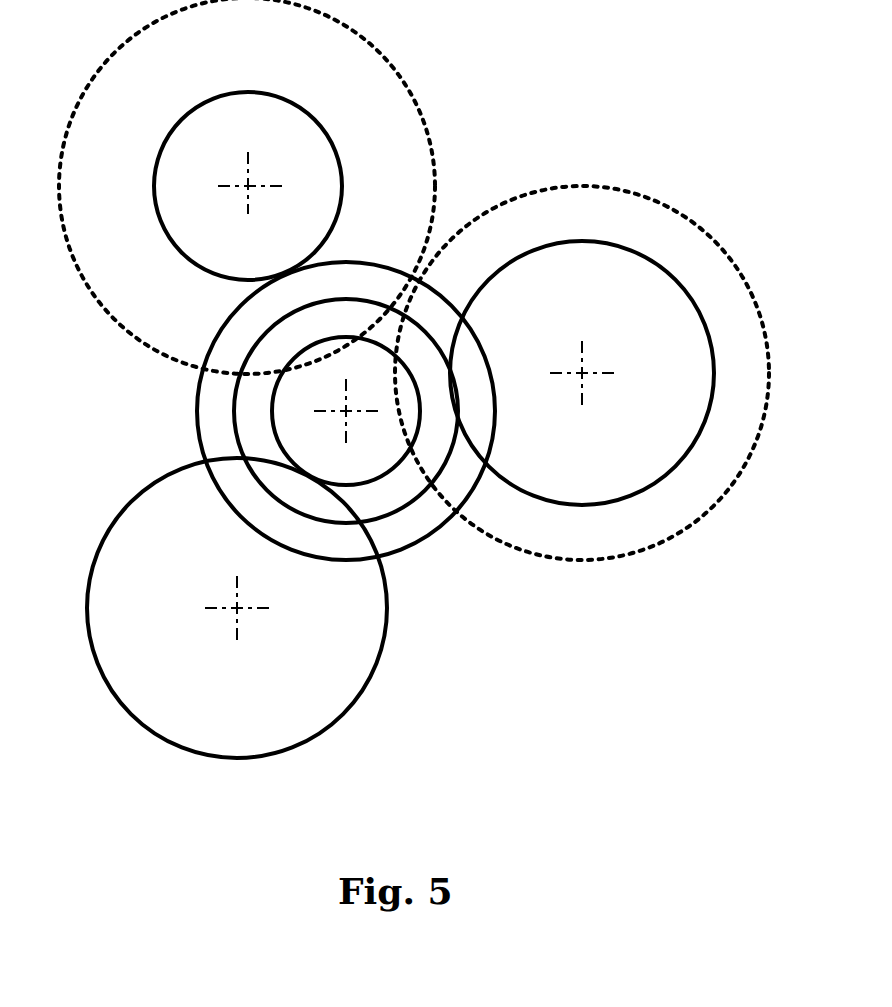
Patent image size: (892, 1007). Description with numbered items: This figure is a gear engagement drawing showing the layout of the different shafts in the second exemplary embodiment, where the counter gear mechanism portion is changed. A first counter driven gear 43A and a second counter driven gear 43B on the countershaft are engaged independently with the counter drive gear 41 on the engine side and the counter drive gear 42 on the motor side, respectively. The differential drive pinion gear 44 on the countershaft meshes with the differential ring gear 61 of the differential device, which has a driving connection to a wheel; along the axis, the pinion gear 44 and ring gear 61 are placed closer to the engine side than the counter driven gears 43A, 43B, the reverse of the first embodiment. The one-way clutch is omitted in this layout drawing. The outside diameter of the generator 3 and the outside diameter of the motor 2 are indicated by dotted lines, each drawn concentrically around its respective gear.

The motor 2 is at (405, 75).
The generator 3 is at (640, 193).
The counter drive gear 41 is at (540, 497).
The counter drive gear 42 is at (150, 185).
The first counter driven gear 43A is at (410, 510).
The second counter driven gear 43B is at (197, 385).
The differential drive pinion gear 44 is at (273, 418).
The differential ring gear 61 is at (380, 648).